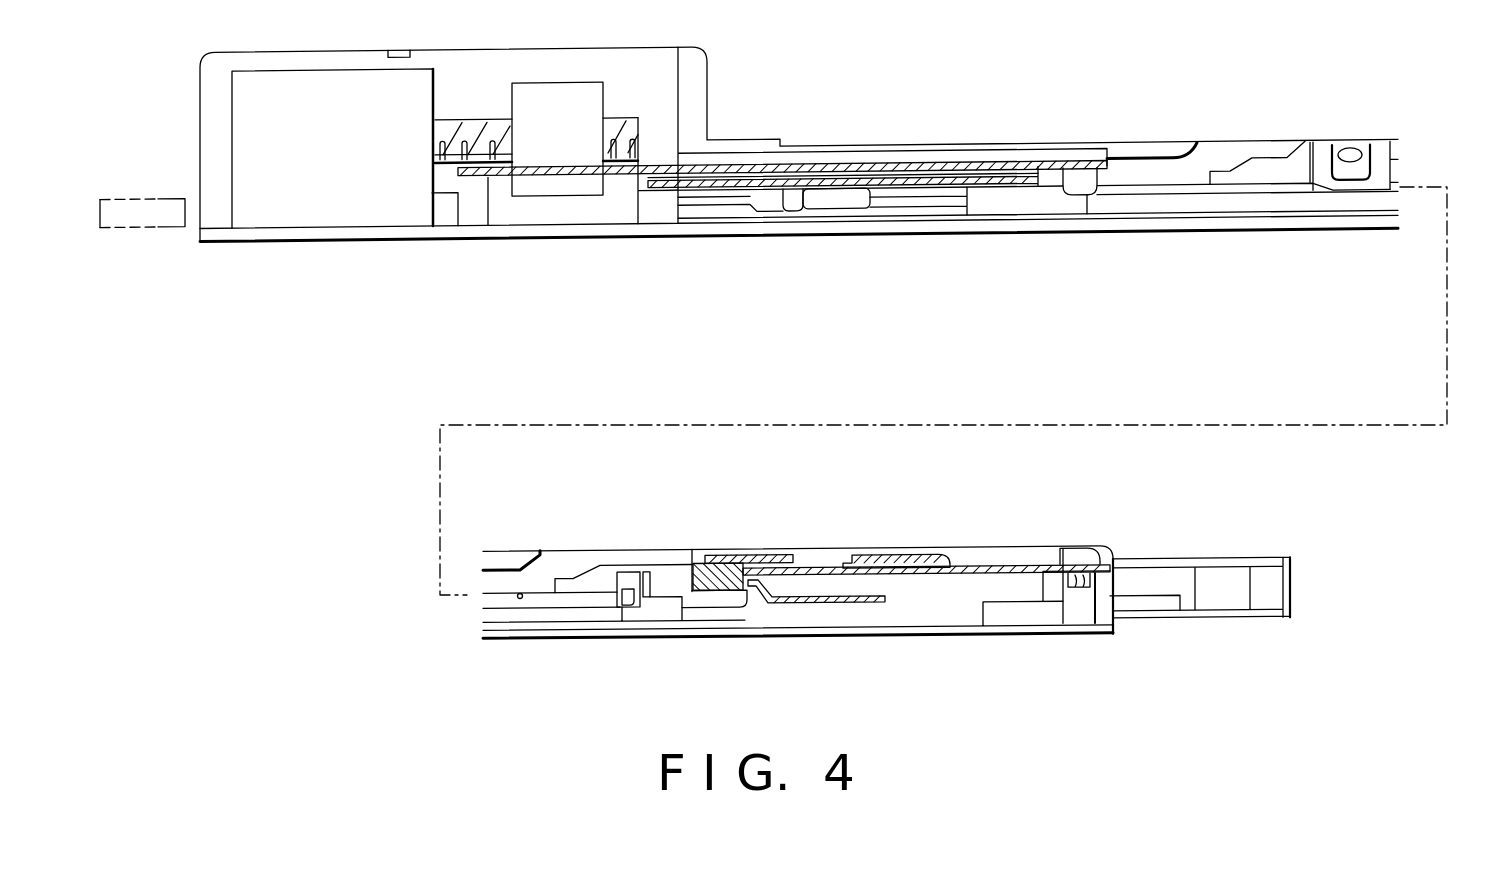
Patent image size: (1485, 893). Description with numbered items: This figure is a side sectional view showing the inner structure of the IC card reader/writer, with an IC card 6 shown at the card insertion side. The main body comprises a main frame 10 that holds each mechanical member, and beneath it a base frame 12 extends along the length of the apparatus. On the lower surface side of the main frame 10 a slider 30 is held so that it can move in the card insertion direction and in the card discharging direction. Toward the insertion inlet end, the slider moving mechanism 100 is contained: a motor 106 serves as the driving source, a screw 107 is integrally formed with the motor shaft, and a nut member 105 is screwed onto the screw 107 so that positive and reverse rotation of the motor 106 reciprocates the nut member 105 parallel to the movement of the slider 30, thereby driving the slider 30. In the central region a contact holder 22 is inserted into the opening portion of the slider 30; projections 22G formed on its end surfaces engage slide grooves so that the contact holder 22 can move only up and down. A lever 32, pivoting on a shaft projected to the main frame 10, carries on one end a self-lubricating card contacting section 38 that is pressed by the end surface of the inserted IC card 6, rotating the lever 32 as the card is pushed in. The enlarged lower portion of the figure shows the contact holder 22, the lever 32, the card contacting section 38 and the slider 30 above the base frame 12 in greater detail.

The IC card 6 is at (163, 218).
The main frame 10 is at (878, 167).
The base frame 12 is at (1260, 222).
The contact holder 22 is at (1148, 160).
The projection 22G is at (1348, 154).
The slider 30 is at (1018, 180).
The lever 32 is at (1013, 563).
The card contacting section 38 is at (713, 600).
The slider moving mechanism 100 is at (400, 205).
The nut member 105 is at (566, 88).
The motor 106 is at (316, 190).
The screw 107 is at (467, 133).